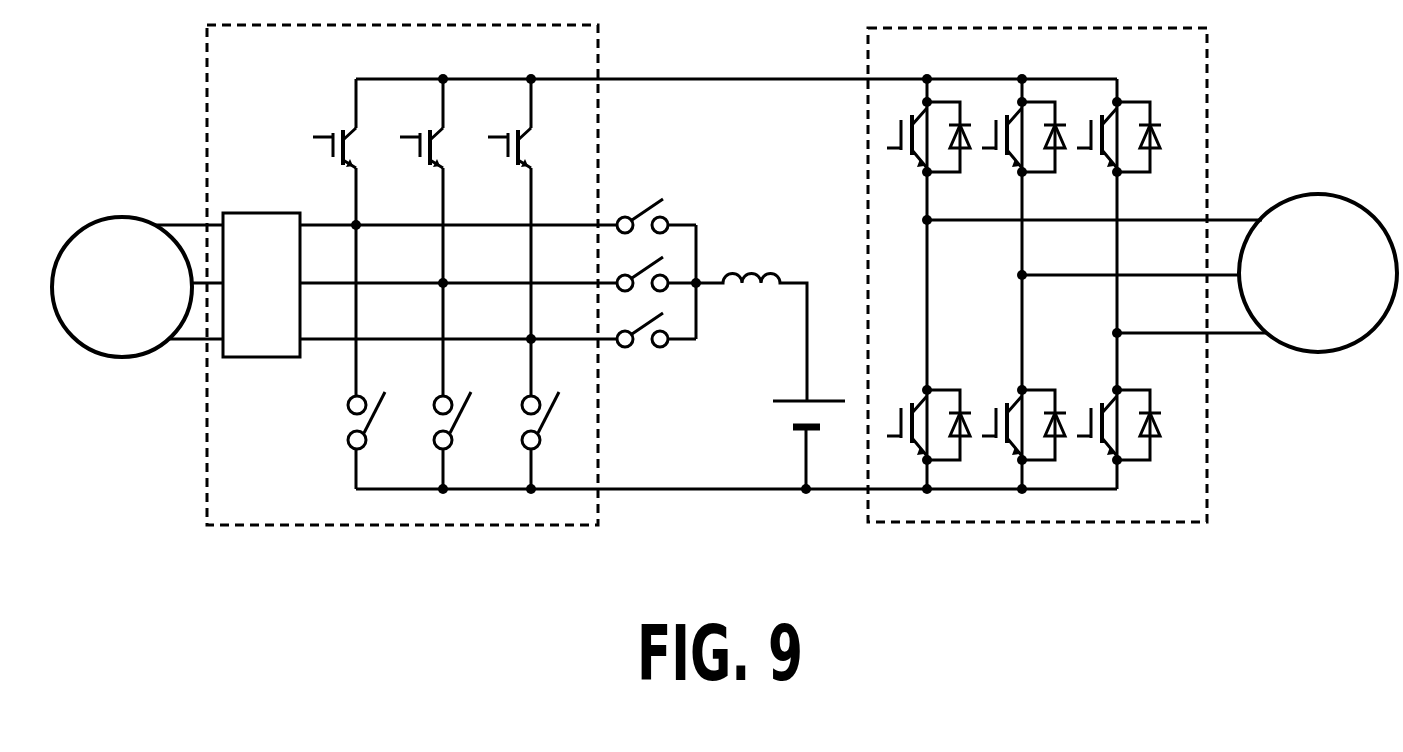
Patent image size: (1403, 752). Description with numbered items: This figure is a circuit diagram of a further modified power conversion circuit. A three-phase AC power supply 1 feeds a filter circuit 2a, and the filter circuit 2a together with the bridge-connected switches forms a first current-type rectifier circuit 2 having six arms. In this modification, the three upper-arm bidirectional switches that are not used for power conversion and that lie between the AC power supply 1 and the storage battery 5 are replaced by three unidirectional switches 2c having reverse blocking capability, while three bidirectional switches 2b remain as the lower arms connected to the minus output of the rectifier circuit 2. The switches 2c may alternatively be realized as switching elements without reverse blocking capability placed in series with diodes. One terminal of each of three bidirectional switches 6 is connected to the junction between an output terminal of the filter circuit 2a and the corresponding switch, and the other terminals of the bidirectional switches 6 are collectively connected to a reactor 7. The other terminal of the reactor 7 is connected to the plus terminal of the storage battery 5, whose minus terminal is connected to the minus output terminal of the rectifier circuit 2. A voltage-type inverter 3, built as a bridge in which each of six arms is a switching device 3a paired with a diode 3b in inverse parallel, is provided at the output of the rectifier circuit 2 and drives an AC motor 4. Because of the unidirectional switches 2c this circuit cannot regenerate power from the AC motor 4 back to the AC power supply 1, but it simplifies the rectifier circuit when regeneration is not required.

The three-phase AC power supply 1 is at (122, 287).
The first current-type rectifier circuit 2 is at (402, 275).
The filter circuit 2a is at (261, 285).
The bidirectional switches 2b is at (474, 415).
The unidirectional switches 2c is at (448, 156).
The voltage-type inverter 3 is at (1037, 275).
The switching devices 3a is at (1003, 272).
The diodes 3b is at (1068, 281).
The AC motor 4 is at (1318, 273).
The storage battery 5 is at (804, 419).
The bidirectional switches 6 is at (656, 267).
The reactor 7 is at (751, 312).